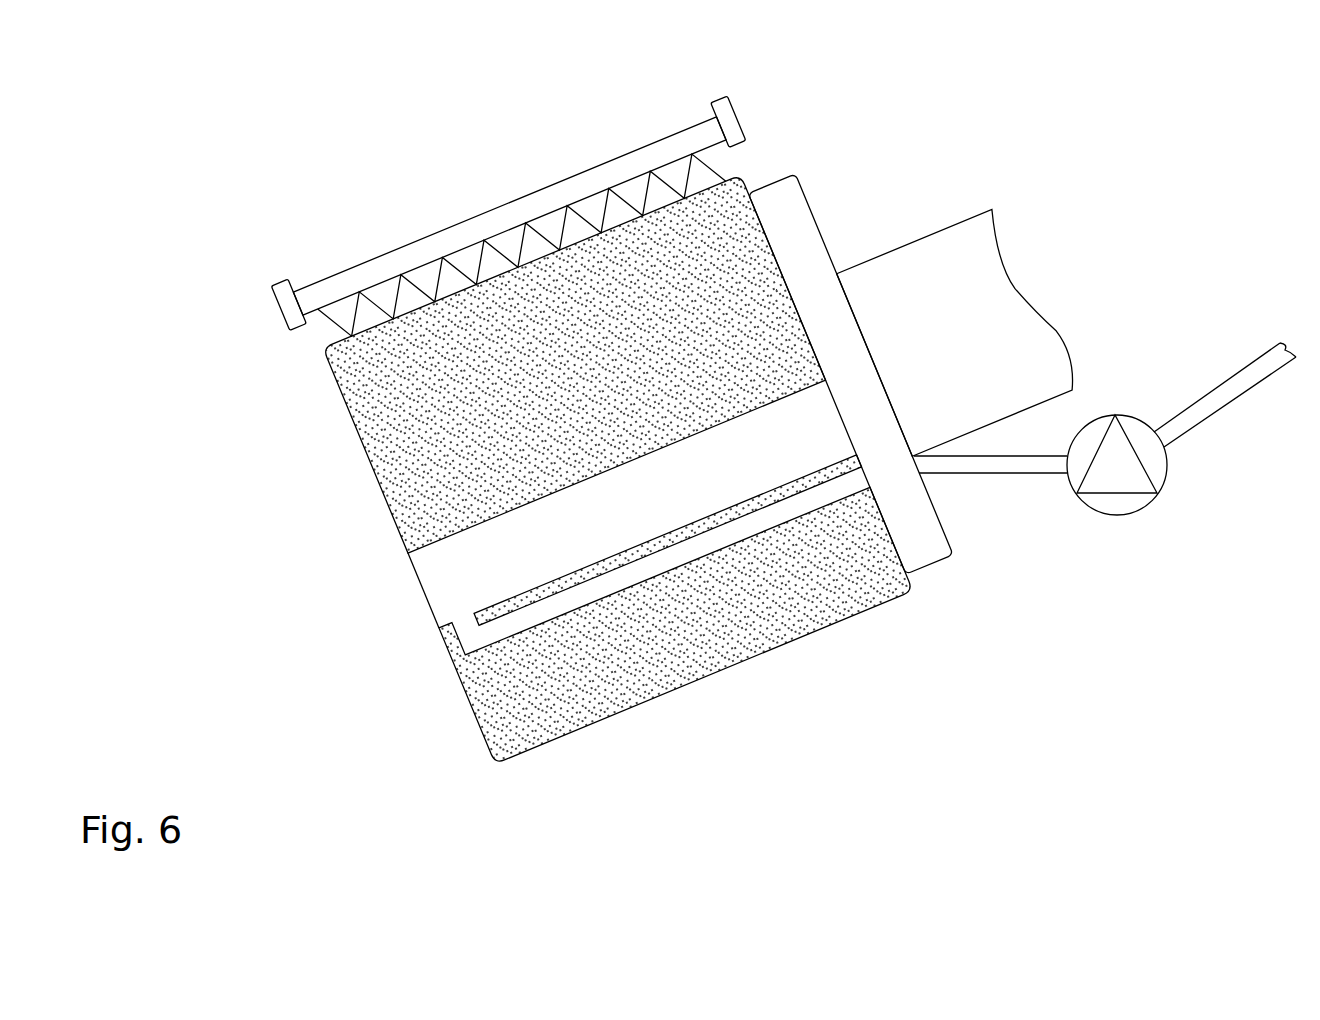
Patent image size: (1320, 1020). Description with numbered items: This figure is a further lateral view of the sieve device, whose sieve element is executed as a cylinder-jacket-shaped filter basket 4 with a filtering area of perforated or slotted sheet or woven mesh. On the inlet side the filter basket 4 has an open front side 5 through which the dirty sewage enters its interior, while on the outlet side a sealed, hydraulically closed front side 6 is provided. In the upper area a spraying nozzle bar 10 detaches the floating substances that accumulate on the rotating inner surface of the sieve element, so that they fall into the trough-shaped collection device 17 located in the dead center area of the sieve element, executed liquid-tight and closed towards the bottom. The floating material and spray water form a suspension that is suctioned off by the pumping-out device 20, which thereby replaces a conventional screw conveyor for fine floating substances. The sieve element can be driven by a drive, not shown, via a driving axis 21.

The filter basket 4 is at (627, 466).
The open front side 5 is at (615, 609).
The closed front side 6 is at (850, 365).
The spraying nozzle bar 10 is at (514, 226).
The collection device 17 is at (572, 551).
The pumping-out device 20 is at (1181, 494).
The driving axis 21 is at (1005, 338).